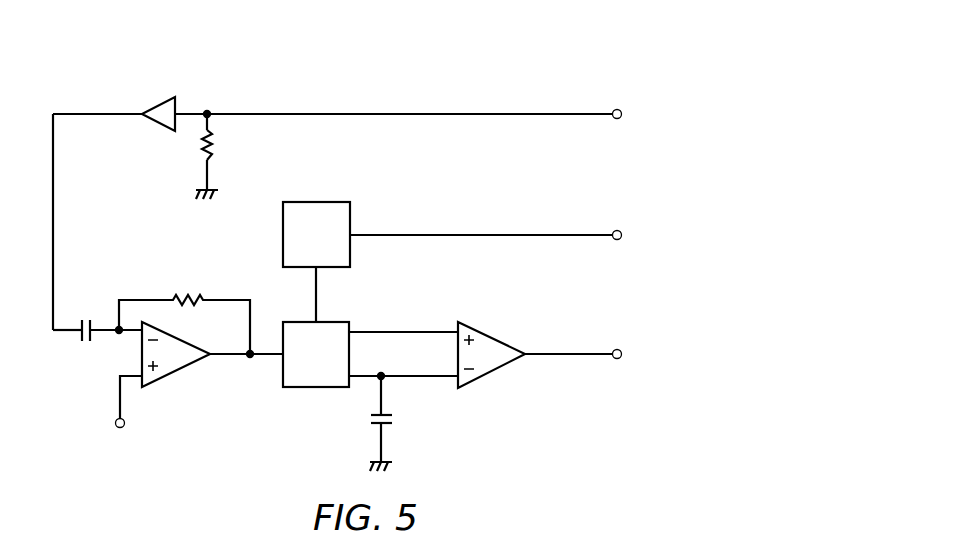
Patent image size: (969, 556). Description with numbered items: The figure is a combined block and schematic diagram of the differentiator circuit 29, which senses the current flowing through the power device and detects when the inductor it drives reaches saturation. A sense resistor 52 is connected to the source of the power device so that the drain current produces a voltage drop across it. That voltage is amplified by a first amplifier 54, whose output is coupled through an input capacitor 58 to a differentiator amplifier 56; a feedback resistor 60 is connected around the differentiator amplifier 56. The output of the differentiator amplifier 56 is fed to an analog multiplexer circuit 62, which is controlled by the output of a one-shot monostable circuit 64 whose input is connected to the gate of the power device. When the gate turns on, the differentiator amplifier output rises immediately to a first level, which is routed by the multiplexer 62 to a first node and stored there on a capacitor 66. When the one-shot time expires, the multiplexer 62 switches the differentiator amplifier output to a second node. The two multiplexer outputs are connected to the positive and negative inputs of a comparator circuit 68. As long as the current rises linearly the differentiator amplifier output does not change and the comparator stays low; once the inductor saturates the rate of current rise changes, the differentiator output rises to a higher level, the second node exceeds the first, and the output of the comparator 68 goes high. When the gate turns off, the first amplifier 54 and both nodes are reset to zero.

The differentiator circuit 29 is at (74, 50).
The resistor Rsense 52 is at (200, 160).
The first amplifier A1 54 is at (164, 98).
The differentiator amplifier A2 56 is at (158, 387).
The input capacitor 58 is at (88, 318).
The feedback resistor 60 is at (175, 297).
The analog multiplexer circuit MUX 62 is at (305, 389).
The one-shot monostable circuit 64 is at (318, 200).
The capacitor CA 66 is at (394, 422).
The comparator circuit C1 68 is at (495, 338).